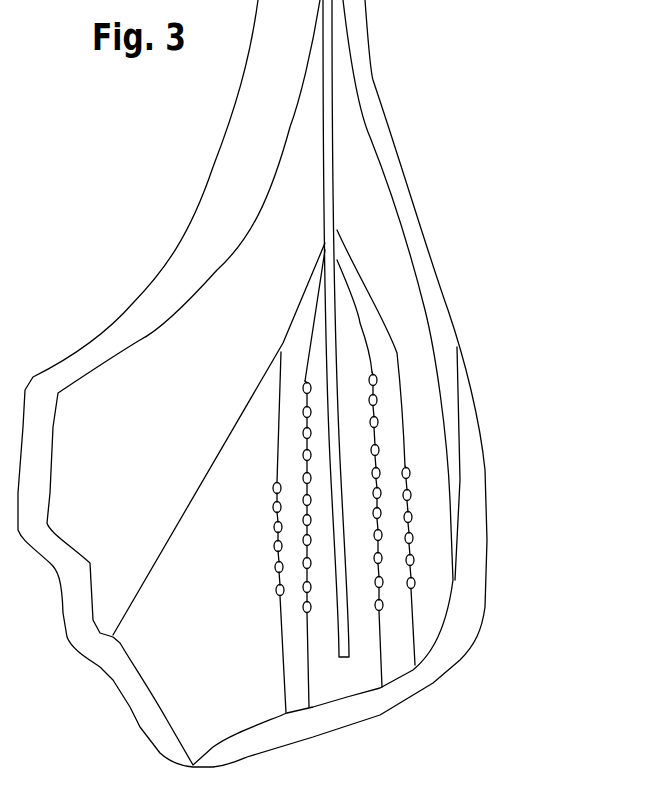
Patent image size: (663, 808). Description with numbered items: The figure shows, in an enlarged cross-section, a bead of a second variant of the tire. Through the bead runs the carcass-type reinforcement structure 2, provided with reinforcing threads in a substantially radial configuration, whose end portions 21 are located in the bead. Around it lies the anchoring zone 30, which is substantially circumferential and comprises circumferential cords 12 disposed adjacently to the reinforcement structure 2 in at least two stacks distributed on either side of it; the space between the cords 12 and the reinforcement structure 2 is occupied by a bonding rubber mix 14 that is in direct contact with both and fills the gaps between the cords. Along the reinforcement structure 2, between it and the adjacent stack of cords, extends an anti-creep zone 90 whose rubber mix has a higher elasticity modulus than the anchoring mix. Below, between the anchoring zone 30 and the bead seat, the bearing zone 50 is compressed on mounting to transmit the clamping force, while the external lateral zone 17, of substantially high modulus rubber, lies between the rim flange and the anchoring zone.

The carcass-type reinforcement structure 2 is at (333, 140).
The circumferential cords 12 is at (307, 520).
The bonding rubber mix 14 is at (295, 372).
The external lateral zone 17 is at (250, 382).
The end portions 21 is at (344, 627).
The anchoring zone 30 is at (290, 430).
The bearing zone 50 is at (385, 700).
The anti-creep zone 90 is at (353, 383).